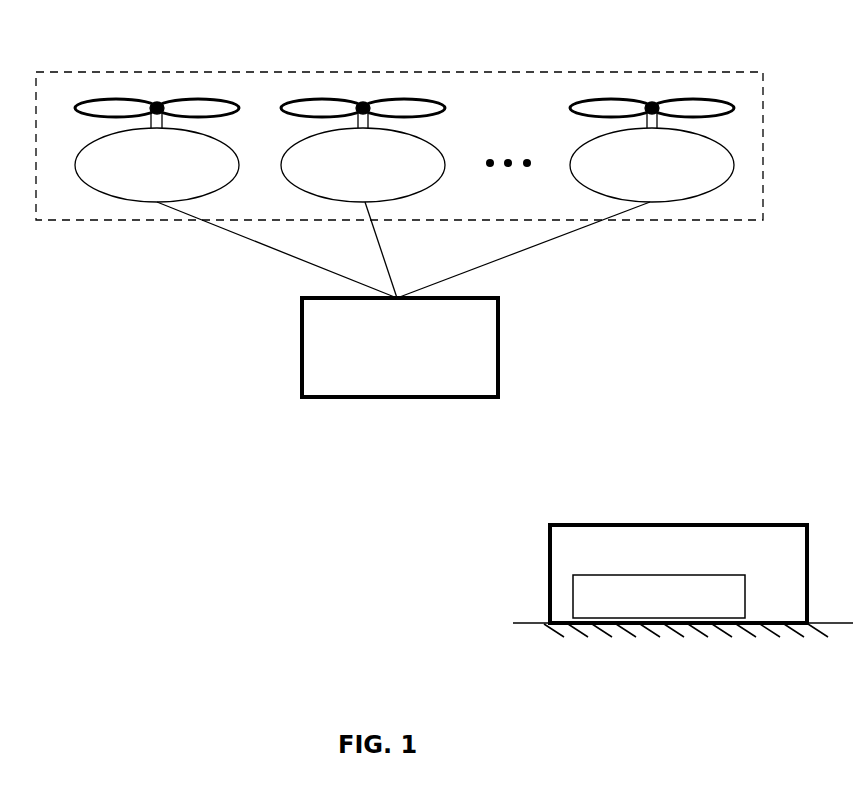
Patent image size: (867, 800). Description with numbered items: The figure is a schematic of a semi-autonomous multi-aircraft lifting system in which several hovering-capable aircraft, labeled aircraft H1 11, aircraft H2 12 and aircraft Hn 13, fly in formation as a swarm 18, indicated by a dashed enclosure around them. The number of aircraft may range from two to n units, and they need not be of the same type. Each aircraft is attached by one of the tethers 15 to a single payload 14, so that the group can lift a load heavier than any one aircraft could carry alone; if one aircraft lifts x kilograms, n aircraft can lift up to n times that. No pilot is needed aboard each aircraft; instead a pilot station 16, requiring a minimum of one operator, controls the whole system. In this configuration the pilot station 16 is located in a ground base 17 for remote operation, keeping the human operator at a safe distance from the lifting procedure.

The swarm 18 is at (144, 72).
The aircraft H1 11 is at (84, 145).
The aircraft H2 12 is at (438, 147).
The aircraft Hn 13 is at (583, 142).
The tethers 15 is at (262, 250).
The payload 14 is at (302, 352).
The ground base 17 is at (550, 550).
The pilot station 16 is at (745, 587).